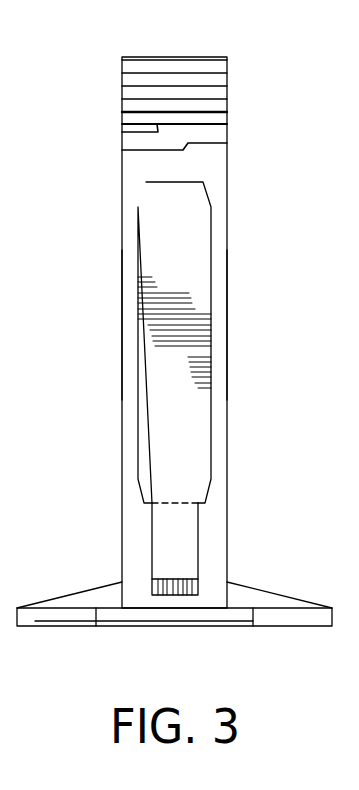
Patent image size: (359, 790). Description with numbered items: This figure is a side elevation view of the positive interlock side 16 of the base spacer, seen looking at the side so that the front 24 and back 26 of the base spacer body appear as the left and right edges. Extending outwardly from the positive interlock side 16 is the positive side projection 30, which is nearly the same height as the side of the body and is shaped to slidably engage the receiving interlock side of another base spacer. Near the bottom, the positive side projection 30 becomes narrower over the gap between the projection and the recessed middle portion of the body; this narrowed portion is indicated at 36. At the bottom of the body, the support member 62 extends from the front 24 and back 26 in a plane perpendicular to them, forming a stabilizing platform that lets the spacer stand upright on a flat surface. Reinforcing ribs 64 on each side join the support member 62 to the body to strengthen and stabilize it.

The positive interlock side 16 is at (238, 153).
The front 24 is at (116, 323).
The back 26 is at (237, 325).
The positive side projection 30 is at (189, 226).
The narrower portion of the positive side projection 36 is at (205, 530).
The support member 62 is at (283, 620).
The reinforcing ribs 64 is at (84, 599).